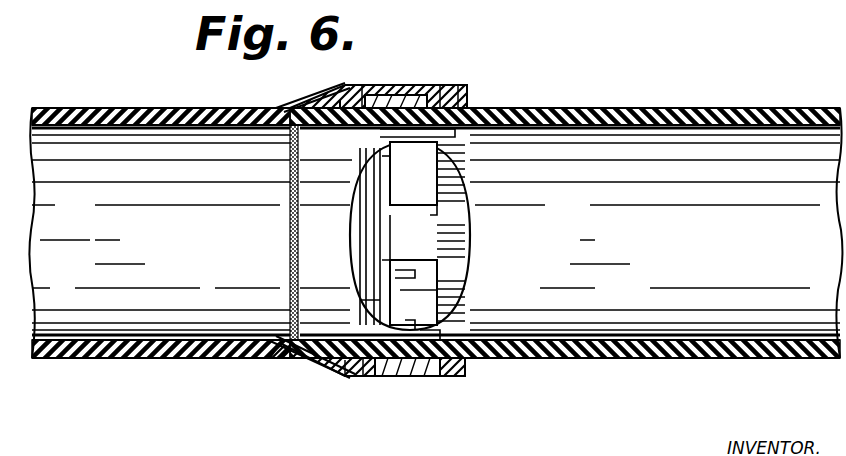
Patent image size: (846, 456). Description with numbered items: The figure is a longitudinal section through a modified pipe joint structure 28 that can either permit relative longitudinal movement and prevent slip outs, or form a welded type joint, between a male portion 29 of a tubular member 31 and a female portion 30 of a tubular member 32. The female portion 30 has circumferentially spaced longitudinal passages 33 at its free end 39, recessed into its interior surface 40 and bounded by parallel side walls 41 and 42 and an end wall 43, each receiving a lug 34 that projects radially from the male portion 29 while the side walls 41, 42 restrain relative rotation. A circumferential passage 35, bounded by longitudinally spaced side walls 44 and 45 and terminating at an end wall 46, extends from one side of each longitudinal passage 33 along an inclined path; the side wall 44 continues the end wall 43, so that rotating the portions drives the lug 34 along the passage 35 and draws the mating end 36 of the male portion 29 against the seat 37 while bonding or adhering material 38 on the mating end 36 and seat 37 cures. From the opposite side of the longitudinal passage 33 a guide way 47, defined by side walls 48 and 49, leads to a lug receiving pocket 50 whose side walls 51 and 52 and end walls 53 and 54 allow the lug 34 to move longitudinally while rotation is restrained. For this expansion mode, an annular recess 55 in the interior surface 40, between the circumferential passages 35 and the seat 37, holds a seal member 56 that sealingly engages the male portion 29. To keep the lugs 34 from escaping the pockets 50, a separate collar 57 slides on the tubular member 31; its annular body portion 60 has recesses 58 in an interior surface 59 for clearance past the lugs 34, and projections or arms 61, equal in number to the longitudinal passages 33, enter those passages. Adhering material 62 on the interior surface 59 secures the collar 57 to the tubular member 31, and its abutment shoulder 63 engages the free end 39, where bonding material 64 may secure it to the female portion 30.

The pipe joint structure 28 is at (498, 75).
The male portion 29 is at (487, 368).
The female portion 30 is at (317, 94).
The tubular member 31 is at (726, 108).
The tubular member 32 is at (100, 108).
The longitudinal passage 33 is at (400, 204).
The lug 34 is at (366, 104).
The circumferential passage 35 is at (392, 160).
The mating end 36 is at (299, 137).
The seat 37 is at (300, 107).
The bonding or adhering material 38 is at (337, 102).
The free end 39 is at (440, 106).
The interior surface 40 is at (390, 124).
The side wall 41 is at (432, 212).
The side wall 42 is at (432, 262).
The end wall 43 is at (380, 226).
The side wall 44 is at (382, 183).
The side wall 45 is at (387, 162).
The end wall 46 is at (386, 170).
The guide passage or way 47 is at (385, 272).
The side wall 48 is at (385, 247).
The side wall 49 is at (388, 262).
The lug receiving pocket 50 is at (404, 291).
The side wall 51 is at (404, 280).
The side wall 52 is at (432, 340).
The end wall 53 is at (385, 297).
The end wall 54 is at (416, 332).
The annular recess 55 is at (365, 378).
The seal member 56 is at (347, 375).
The collar 57 is at (477, 97).
The recess 58 is at (455, 171).
The interior surface 59 is at (456, 236).
The annular body portion 60 is at (458, 104).
The projection or arm 61 is at (404, 100).
The adhering or bonding material 62 is at (452, 133).
The abutment surface or shoulder 63 is at (424, 378).
The bonding or adhering material 64 is at (443, 378).